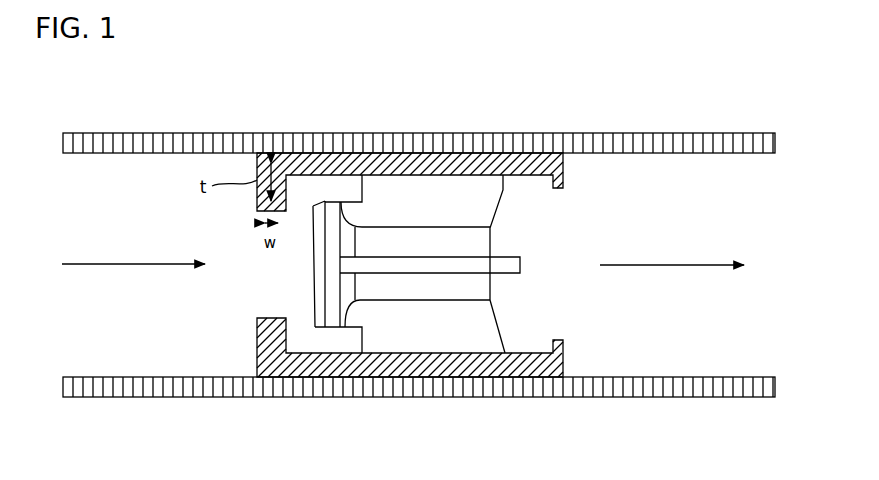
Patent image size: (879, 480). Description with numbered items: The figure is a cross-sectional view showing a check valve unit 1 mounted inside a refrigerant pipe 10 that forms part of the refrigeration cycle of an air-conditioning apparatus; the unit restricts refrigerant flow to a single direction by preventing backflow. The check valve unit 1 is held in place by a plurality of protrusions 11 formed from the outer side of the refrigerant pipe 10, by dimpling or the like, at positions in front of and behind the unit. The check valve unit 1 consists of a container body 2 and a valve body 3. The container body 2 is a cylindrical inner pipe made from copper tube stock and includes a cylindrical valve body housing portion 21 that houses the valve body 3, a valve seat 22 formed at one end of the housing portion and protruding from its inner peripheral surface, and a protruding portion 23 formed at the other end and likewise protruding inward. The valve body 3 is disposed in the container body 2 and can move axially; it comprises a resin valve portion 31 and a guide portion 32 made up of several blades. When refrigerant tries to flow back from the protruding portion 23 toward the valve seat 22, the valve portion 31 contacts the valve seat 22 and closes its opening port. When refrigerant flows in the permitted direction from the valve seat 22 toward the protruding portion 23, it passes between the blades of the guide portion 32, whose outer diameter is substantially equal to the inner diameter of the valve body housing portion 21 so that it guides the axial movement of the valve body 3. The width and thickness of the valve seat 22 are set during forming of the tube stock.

The check valve unit 1 is at (479, 259).
The container body 2 is at (462, 160).
The valve body 3 is at (425, 285).
The refrigerant pipe 10 is at (127, 142).
The protrusions 11 is at (253, 133).
The valve body housing portion 21 is at (410, 163).
The valve seat 22 is at (288, 200).
The protruding portion 23 is at (568, 178).
The valve portion 31 is at (318, 280).
The guide portion 32 is at (460, 345).